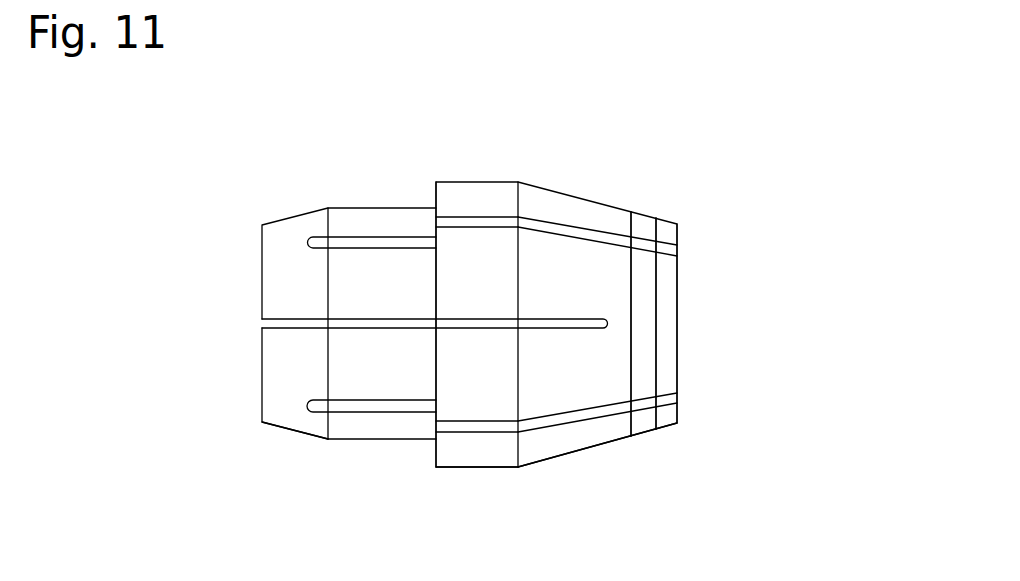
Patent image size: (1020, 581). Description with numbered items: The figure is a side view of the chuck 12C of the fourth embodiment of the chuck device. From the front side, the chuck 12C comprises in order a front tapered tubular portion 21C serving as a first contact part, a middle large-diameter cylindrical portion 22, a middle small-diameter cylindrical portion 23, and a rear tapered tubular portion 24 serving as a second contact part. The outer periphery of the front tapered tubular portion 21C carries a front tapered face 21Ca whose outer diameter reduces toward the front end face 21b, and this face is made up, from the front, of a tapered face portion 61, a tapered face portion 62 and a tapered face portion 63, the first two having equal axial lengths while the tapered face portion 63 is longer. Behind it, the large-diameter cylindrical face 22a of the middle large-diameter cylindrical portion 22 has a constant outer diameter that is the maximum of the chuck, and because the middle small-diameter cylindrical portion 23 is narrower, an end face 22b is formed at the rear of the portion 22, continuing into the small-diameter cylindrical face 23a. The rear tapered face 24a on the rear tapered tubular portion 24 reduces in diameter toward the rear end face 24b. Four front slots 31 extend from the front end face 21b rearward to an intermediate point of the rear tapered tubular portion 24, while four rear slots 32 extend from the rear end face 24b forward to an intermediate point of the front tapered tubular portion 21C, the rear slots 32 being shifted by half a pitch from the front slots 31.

The chuck 12C is at (674, 196).
The front tapered tubular portion 21C is at (595, 210).
The front tapered face 21Ca is at (565, 455).
The front end face 21b is at (680, 413).
The middle large-diameter cylindrical portion 22 is at (478, 192).
The large-diameter cylindrical face 22a is at (476, 468).
The end face 22b is at (434, 450).
The middle small-diameter cylindrical portion 23 is at (387, 222).
The small-diameter cylindrical face 23a is at (367, 440).
The rear tapered tubular portion 24 is at (294, 230).
The rear tapered face 24a is at (285, 431).
The rear end face 24b is at (261, 388).
The front slot 31 is at (362, 245).
The rear slot 32 is at (348, 322).
The tapered face portion 61 is at (667, 428).
The tapered face portion 62 is at (643, 434).
The tapered face portion 63 is at (610, 444).